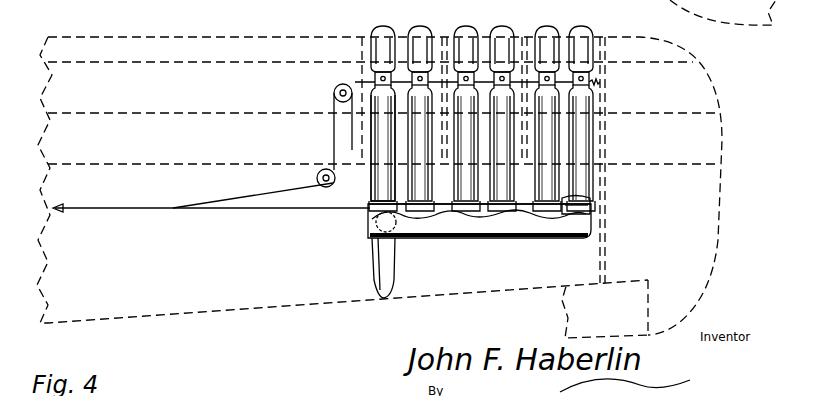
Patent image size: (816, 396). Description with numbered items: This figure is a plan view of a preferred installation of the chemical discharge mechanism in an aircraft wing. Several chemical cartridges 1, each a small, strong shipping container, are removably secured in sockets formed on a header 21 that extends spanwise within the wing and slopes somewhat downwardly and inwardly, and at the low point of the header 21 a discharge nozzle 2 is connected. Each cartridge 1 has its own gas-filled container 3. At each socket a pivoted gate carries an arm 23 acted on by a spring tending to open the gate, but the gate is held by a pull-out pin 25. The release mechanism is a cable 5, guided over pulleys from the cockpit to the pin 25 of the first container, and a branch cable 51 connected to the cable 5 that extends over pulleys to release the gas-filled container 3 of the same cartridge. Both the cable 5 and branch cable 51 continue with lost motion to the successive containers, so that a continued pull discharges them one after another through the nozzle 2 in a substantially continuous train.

The chemical container cartridge 1 is at (375, 183).
The discharge nozzle 2 is at (380, 275).
The gas-filled container 3 is at (385, 45).
The cable 5 is at (90, 212).
The header 21 is at (447, 240).
The arm 23 is at (566, 197).
The pull-out pin 25 is at (368, 222).
The branch cable 51 is at (269, 192).